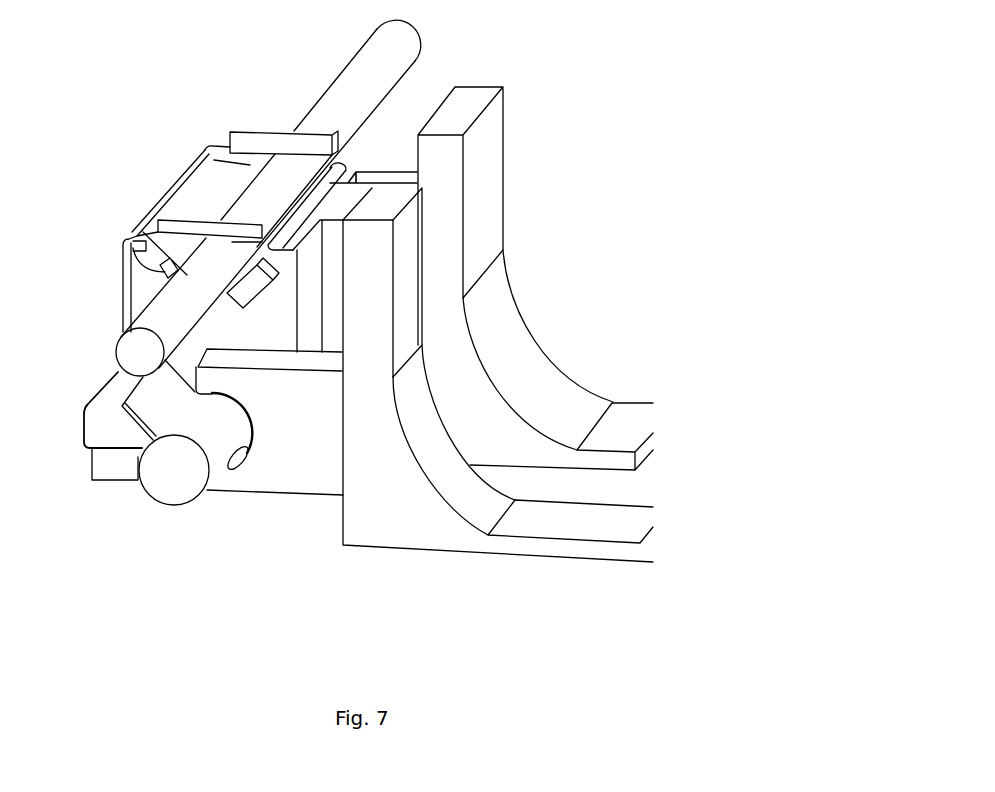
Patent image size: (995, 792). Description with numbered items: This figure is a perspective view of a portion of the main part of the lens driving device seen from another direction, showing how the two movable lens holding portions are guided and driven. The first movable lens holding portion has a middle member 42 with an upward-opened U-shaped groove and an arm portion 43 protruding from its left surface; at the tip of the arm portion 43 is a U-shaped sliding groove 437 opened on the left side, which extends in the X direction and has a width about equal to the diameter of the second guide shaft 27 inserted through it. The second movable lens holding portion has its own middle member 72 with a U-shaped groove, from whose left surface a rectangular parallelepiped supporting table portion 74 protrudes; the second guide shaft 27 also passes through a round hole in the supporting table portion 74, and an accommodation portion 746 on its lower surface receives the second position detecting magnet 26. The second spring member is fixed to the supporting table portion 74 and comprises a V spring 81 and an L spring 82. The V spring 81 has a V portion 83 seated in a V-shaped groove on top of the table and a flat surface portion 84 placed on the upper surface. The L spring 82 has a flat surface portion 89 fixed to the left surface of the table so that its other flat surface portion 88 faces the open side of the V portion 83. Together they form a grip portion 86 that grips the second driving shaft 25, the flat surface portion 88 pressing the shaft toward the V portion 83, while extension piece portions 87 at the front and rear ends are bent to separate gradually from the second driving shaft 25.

The second driving shaft 25 is at (372, 62).
The second position detecting magnet 26 is at (127, 473).
The second guide shaft 27 is at (183, 497).
The middle member 42 is at (413, 420).
The arm portion 43 is at (330, 482).
The sliding groove 437 is at (228, 455).
The middle member 72 is at (487, 187).
The supporting table portion 74 is at (368, 172).
The accommodation portion 746 is at (108, 440).
The V spring 81 is at (285, 267).
The L spring 82 is at (225, 180).
The V portion 83 is at (238, 290).
The flat surface portion 84 is at (342, 176).
The grip portion 86 is at (237, 230).
The extension piece portion 87 is at (253, 137).
The flat surface portion 88 is at (232, 168).
The flat surface portion 89 is at (122, 292).